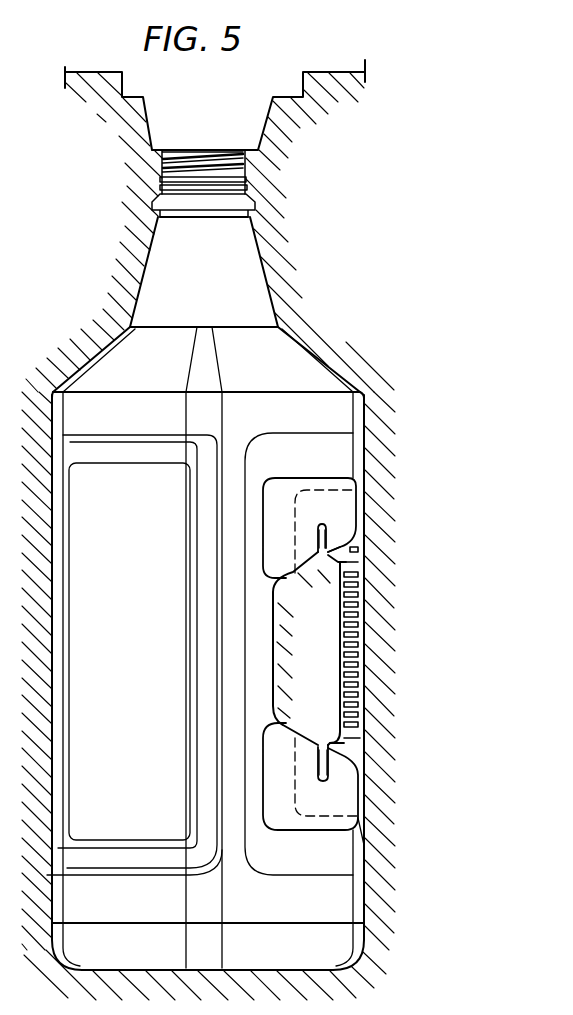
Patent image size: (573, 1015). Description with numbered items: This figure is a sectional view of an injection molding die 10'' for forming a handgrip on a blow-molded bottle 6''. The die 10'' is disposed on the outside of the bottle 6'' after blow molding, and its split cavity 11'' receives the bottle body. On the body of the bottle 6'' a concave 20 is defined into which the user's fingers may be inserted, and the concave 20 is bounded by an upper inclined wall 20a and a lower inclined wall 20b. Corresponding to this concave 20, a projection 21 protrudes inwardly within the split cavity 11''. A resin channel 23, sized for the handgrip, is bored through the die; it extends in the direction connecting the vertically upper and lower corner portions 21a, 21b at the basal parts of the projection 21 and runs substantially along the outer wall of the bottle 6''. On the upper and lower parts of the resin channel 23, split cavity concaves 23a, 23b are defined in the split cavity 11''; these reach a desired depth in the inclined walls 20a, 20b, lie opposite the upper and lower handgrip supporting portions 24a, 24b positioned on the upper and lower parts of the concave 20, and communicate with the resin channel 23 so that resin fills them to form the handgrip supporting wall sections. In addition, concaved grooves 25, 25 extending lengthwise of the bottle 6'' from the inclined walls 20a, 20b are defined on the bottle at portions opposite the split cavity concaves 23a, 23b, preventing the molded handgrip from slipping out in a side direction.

The injection molding die 10'' is at (210, 205).
The bottle 6'' is at (232, 272).
The split cavity 11'' is at (231, 350).
The concave 20 is at (250, 648).
The upper inclined wall 20a is at (350, 622).
The lower inclined wall 20b is at (285, 723).
The projection 21 is at (360, 611).
The upper corner portion 21a is at (358, 561).
The lower corner portion 21b is at (362, 753).
The resin channel 23 is at (362, 655).
The upper split cavity concave 23a is at (358, 502).
The lower split cavity concave 23b is at (363, 820).
The upper handgrip supporting portion 24a is at (328, 500).
The lower handgrip supporting portion 24b is at (337, 787).
The concaved grooves 25 is at (317, 537).